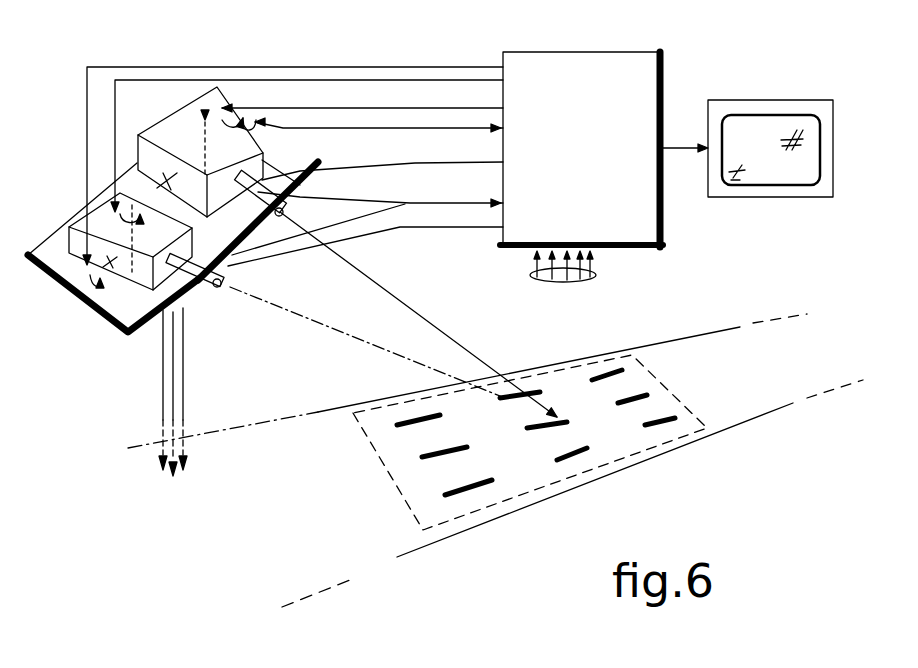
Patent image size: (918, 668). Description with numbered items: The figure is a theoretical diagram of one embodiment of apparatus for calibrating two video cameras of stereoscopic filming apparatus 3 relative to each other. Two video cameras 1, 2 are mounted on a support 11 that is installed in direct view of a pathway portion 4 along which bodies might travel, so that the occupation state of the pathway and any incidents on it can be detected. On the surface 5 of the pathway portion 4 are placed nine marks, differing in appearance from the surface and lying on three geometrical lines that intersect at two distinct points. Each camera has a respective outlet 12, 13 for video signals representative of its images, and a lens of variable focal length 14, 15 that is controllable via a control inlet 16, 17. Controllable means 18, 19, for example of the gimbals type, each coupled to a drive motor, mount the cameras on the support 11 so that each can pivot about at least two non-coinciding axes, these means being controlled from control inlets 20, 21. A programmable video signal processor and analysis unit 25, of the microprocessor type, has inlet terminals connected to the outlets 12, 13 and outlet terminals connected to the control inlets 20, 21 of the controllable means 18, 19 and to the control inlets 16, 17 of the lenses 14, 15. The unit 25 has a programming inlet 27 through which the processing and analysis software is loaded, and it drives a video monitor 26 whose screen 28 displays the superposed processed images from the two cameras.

The first video camera 1 is at (163, 249).
The second video camera 2 is at (192, 151).
The stereoscopic filming apparatus 3 is at (101, 327).
The pathway portion 4 is at (528, 468).
The surface of the pathway portion 5 is at (568, 397).
The support 11 is at (176, 357).
The outlet of the first camera 12 is at (232, 244).
The outlet of the second camera 13 is at (296, 152).
The variable focal length lens 14 is at (194, 284).
The variable focal length lens 15 is at (300, 197).
The control inlet 16 is at (228, 272).
The control inlet 17 is at (368, 165).
The controllable mounting means 18 is at (78, 291).
The controllable mounting means 19 is at (203, 116).
The control inlet 20 is at (123, 147).
The control inlet 21 is at (300, 106).
The programmable video signal processor and analysis unit 25 is at (603, 95).
The video monitor 26 is at (752, 118).
The programming inlet 27 is at (597, 274).
The screen 28 is at (783, 177).